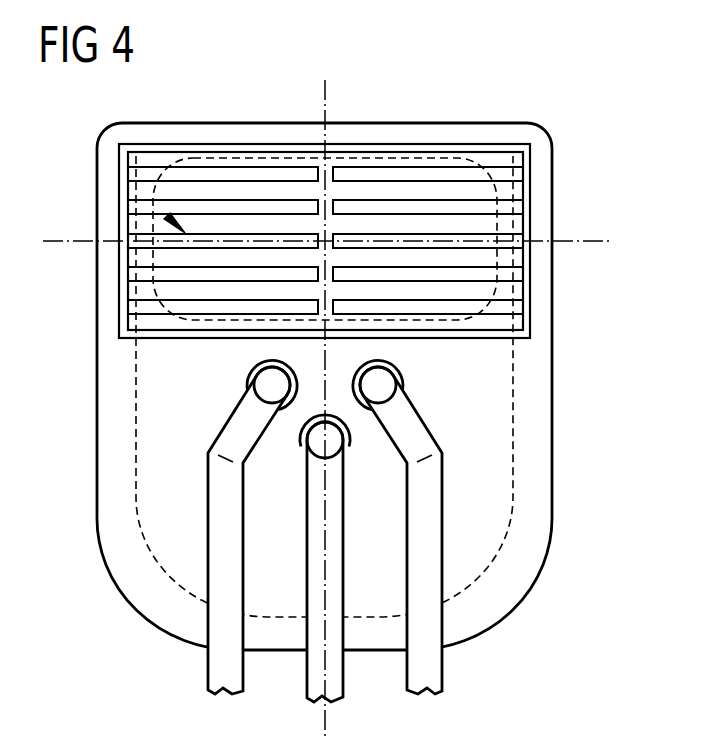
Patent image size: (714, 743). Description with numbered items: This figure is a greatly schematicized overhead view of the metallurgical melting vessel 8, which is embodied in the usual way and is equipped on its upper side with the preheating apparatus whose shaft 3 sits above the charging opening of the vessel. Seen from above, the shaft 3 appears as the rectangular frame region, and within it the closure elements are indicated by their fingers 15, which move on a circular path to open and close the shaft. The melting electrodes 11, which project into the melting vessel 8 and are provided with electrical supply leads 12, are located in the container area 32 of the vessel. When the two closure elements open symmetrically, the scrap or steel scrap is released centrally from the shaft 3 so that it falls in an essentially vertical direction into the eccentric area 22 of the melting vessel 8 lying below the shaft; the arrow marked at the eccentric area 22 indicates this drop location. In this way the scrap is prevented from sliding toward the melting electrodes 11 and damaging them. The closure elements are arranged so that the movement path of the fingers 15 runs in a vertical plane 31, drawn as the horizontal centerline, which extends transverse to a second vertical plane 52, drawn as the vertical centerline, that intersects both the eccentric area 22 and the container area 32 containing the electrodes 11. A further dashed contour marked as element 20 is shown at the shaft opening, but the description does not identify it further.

The shaft 3 is at (118, 275).
The melting vessel 8 is at (540, 470).
The melting electrodes 11 is at (248, 378).
The electrical supply leads 12 is at (218, 664).
The fingers 15 is at (395, 207).
The inner contour of grille opening 20 is at (477, 303).
The eccentric area 22 is at (167, 216).
The vertical plane 31 is at (593, 242).
The container area 32 is at (152, 433).
The vertical plane 52 is at (327, 715).